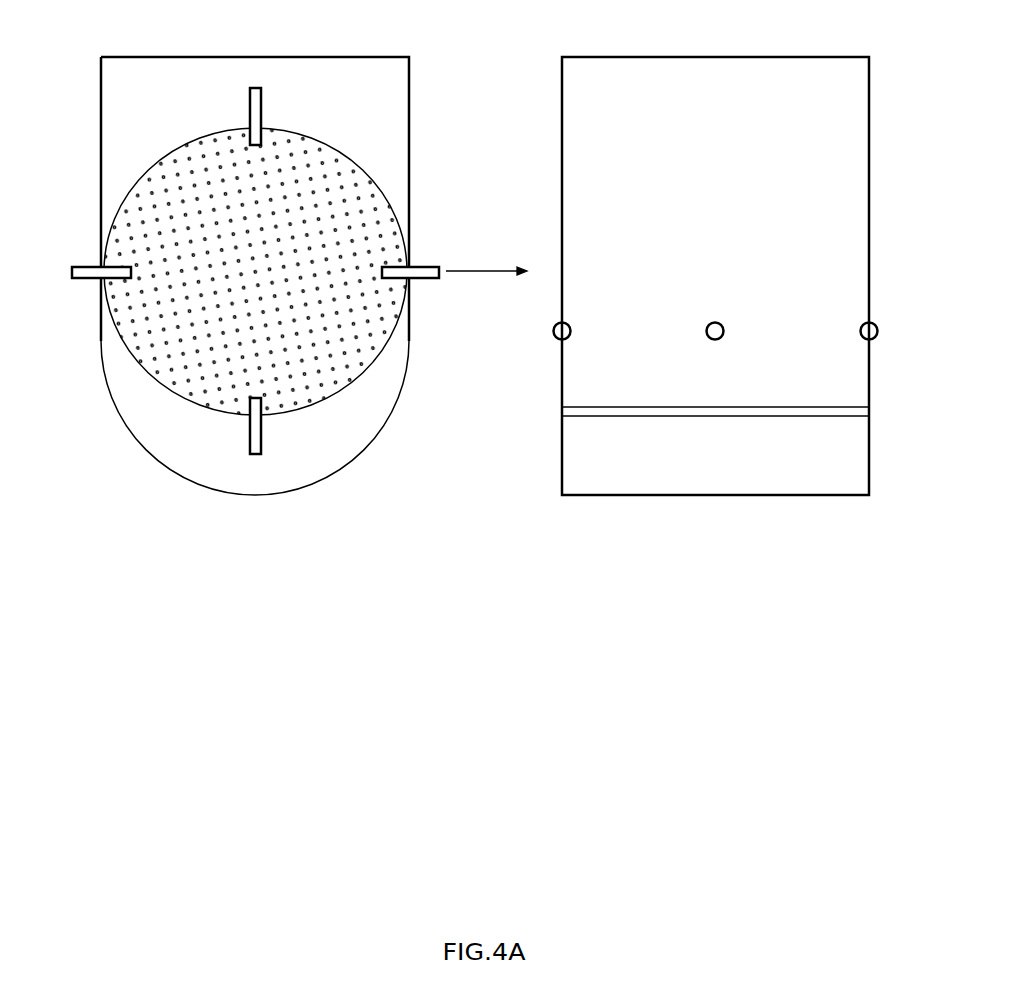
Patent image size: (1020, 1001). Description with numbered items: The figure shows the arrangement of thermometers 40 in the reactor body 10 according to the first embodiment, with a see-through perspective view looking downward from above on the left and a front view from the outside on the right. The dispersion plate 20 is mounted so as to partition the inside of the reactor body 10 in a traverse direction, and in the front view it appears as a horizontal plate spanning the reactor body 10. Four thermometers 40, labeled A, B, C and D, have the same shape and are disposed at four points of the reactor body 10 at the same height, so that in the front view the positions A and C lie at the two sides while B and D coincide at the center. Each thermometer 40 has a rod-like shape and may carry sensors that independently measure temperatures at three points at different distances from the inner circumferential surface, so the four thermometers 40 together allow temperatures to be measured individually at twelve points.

The reactor body 10 is at (410, 85).
The dispersion plate 20 is at (383, 212).
The thermometer 40 is at (254, 87).
The measurement position A is at (71, 271).
The measurement position B is at (249, 103).
The measurement position C is at (420, 279).
The measurement position D is at (249, 436).